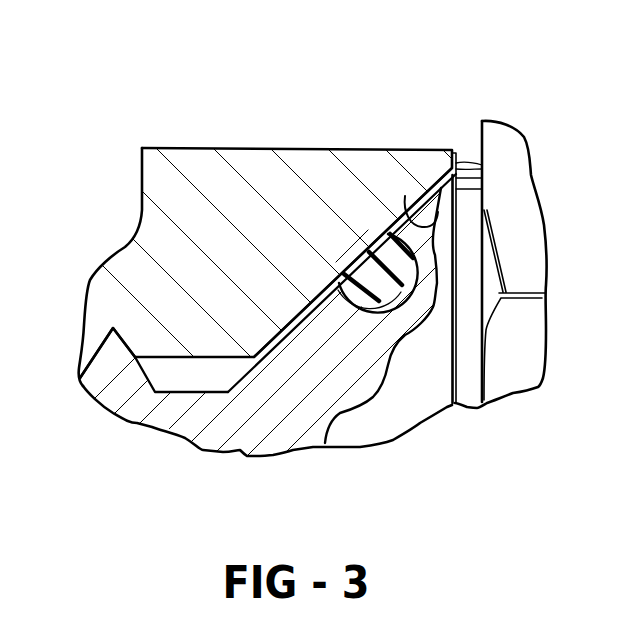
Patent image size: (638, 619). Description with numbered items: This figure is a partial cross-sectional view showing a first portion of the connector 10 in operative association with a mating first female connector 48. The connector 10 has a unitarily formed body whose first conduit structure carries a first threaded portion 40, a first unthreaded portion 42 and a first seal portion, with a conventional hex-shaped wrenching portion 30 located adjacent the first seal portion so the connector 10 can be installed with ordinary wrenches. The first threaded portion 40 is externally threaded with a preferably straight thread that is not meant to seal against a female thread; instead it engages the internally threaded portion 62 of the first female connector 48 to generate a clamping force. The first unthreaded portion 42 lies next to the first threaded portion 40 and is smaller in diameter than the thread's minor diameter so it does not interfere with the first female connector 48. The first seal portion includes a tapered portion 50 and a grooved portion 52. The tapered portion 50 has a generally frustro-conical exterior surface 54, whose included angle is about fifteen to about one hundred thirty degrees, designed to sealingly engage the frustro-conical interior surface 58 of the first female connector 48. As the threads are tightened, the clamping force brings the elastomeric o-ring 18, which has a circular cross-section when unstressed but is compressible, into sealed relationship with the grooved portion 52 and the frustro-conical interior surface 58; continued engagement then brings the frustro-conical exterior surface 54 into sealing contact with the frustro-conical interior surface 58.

The connector 10 is at (508, 105).
The o-ring 18 is at (380, 250).
The wrenching portion 30 is at (518, 196).
The first threaded portion 40 is at (100, 372).
The first unthreaded portion 42 is at (186, 399).
The first female connector 48 is at (220, 174).
The tapered portion 50 is at (257, 369).
The grooved portion 52 is at (301, 318).
The frustro-conical exterior surface 54 is at (350, 300).
The frustro-conical interior surface 58 is at (421, 217).
The internally threaded portion 62 is at (88, 351).